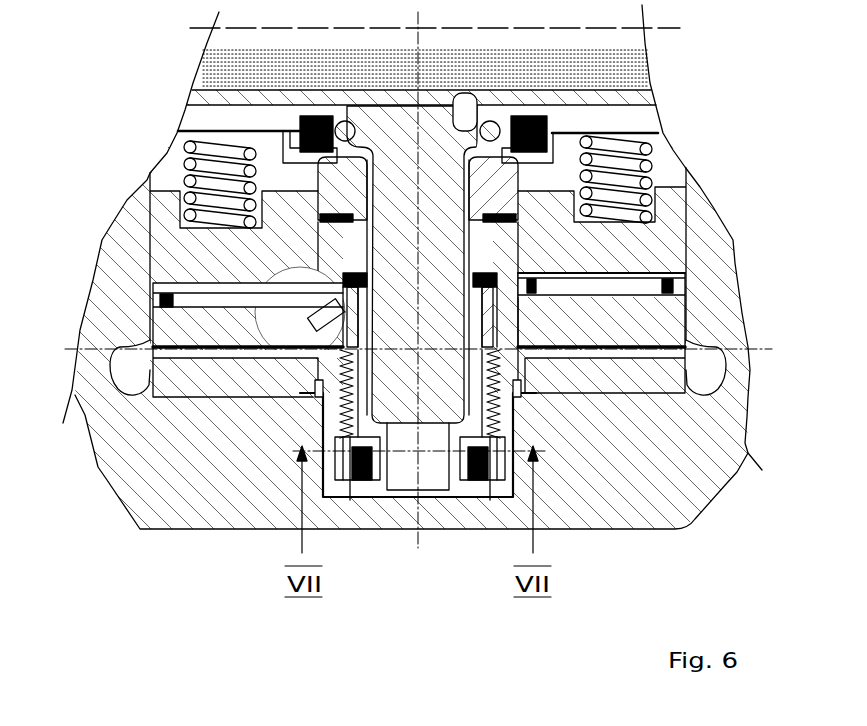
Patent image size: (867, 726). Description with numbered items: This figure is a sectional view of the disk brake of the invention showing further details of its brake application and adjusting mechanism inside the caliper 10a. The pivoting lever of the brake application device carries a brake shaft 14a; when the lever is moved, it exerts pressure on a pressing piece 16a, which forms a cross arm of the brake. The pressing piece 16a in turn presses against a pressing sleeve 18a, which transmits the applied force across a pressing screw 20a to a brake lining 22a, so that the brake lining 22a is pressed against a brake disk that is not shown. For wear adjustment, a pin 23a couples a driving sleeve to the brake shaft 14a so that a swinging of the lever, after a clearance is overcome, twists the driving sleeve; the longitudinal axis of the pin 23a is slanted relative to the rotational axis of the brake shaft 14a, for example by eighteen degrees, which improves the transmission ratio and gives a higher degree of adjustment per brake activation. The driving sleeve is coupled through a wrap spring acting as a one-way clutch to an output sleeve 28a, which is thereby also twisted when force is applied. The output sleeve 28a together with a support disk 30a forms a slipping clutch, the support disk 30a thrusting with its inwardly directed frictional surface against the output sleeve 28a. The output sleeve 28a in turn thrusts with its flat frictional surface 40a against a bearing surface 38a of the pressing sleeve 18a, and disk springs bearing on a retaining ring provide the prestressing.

The caliper 10a is at (731, 483).
The brake shaft 14a is at (667, 330).
The pressing piece 16a is at (663, 235).
The pressing sleeve 18a is at (480, 238).
The pressing screw 20a is at (397, 223).
The brake lining 22a is at (637, 67).
The pin 23a is at (330, 332).
The output sleeve 28a is at (520, 417).
The support disk 30a is at (500, 410).
The bearing surface 38a is at (352, 480).
The frictional surface 40a is at (493, 396).